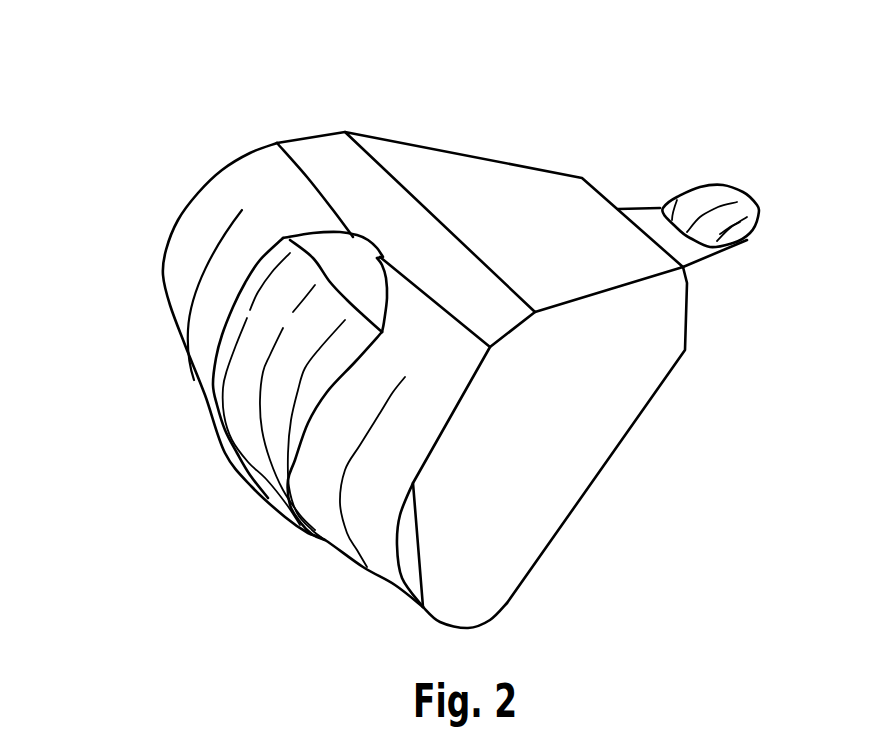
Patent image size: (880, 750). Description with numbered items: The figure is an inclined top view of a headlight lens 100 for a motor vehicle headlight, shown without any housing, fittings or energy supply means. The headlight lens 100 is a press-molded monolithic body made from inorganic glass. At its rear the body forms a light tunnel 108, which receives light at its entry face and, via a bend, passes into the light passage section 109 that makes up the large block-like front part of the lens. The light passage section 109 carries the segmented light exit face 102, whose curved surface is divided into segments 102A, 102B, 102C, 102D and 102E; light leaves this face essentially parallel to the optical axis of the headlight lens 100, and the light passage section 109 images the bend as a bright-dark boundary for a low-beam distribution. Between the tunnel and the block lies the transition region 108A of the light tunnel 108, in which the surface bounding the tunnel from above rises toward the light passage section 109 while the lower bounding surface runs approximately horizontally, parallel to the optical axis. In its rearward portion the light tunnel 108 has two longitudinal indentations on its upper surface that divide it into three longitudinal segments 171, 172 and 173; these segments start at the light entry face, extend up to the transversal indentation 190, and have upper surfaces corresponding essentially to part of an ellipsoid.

The headlight lens 100 is at (679, 415).
The light exit face 102 is at (200, 400).
The segment of the light exit face 102A is at (258, 452).
The segment of the light exit face 102B is at (180, 252).
The segment of the light exit face 102C is at (212, 302).
The segment of the light exit face 102D is at (310, 533).
The segment of the light exit face 102E is at (375, 542).
The light tunnel 108 is at (710, 187).
The transition region 108A is at (633, 208).
The light passage section 109 is at (435, 163).
The longitudinal segment 171 is at (723, 183).
The longitudinal segment 172 is at (678, 217).
The longitudinal segment 173 is at (757, 213).
The transversal indentation 190 is at (703, 250).